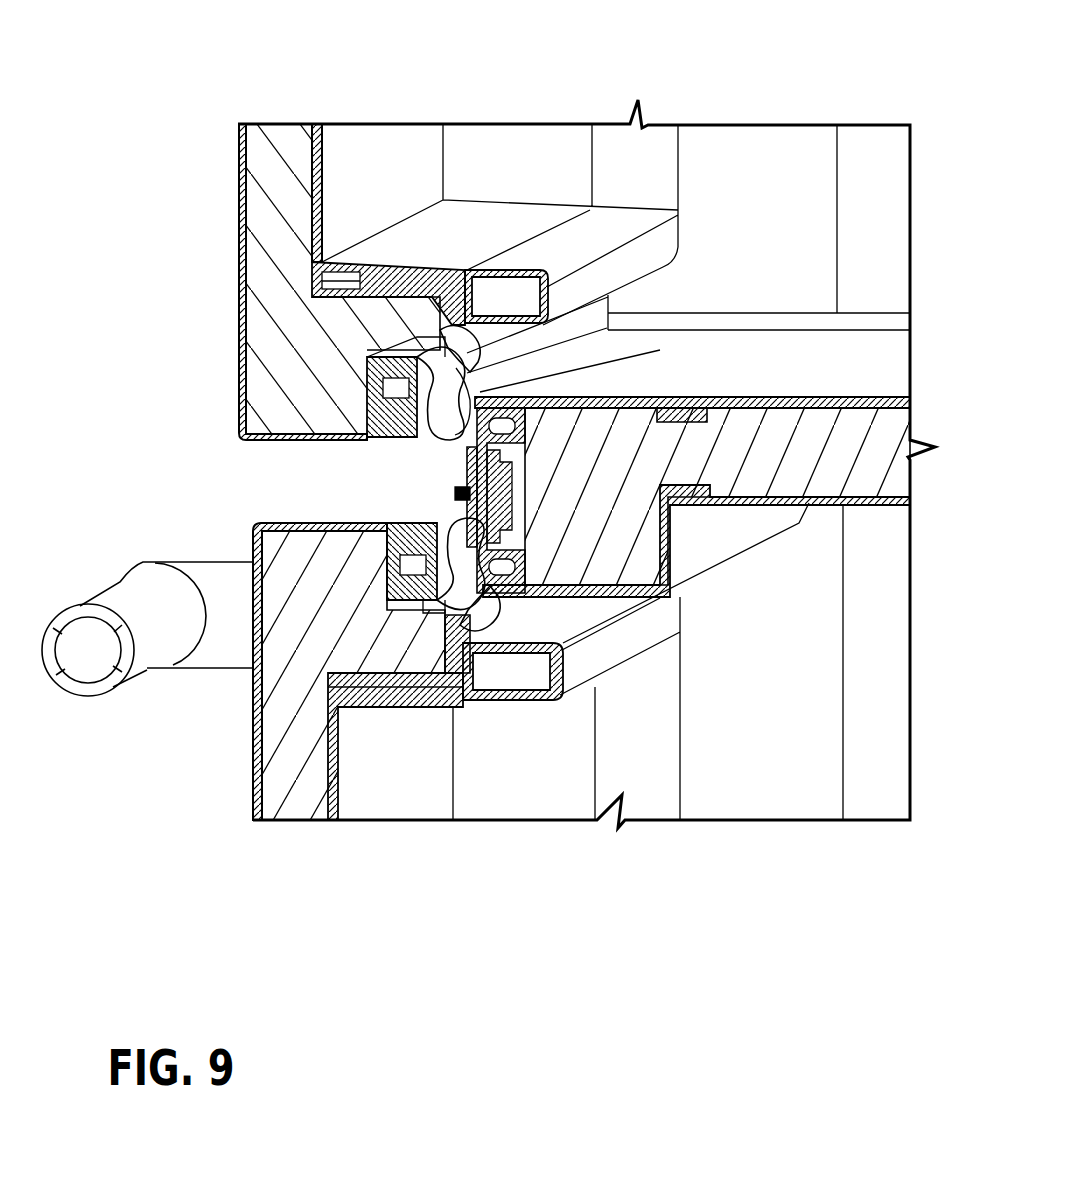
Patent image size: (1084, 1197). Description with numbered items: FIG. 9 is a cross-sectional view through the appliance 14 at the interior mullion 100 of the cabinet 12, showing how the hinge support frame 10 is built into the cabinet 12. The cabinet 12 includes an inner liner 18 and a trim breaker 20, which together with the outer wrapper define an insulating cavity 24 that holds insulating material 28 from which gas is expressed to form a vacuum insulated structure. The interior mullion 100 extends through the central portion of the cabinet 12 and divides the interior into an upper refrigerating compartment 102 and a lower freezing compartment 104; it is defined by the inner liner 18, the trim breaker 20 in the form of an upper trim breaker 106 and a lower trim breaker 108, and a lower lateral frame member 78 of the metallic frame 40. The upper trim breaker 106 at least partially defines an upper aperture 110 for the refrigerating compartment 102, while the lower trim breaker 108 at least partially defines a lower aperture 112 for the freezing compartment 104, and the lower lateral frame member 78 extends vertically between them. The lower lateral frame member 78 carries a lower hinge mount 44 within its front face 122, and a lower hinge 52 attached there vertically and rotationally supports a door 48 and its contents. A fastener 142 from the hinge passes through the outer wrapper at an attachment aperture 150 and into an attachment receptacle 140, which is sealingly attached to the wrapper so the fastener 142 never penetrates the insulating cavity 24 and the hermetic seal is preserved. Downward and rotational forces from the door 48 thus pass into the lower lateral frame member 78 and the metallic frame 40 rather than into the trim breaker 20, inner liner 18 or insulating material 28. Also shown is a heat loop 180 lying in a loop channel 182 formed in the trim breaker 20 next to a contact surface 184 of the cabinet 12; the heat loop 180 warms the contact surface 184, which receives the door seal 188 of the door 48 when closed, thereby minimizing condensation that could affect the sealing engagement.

The hinge support frame 10 is at (282, 468).
The cabinet 12 is at (690, 86).
The appliance 14 is at (198, 163).
The inner liner 18 is at (823, 507).
The trim breaker 20 is at (777, 332).
The insulating cavity 24 is at (824, 412).
The insulating material 28 is at (861, 446).
The metallic frame 40 is at (505, 385).
The lower hinge mount 44 is at (438, 476).
The door 48 is at (232, 230).
The lower hinge 52 is at (393, 528).
The lower lateral frame member 78 is at (432, 640).
The interior mullion 100 is at (756, 512).
The refrigerating compartment 102 is at (736, 145).
The freezing compartment 104 is at (822, 667).
The upper trim breaker 106 is at (520, 396).
The lower trim breaker 108 is at (535, 565).
The upper aperture 110 is at (400, 356).
The lower aperture 112 is at (492, 612).
The front face 122 is at (455, 452).
The attachment receptacle 140 is at (527, 490).
The fastener 142 is at (455, 493).
The attachment aperture 150 is at (425, 535).
The heat loop 180 is at (505, 615).
The loop channel 182 is at (658, 546).
The contact surface 184 is at (367, 410).
The door seal 188 is at (470, 300).